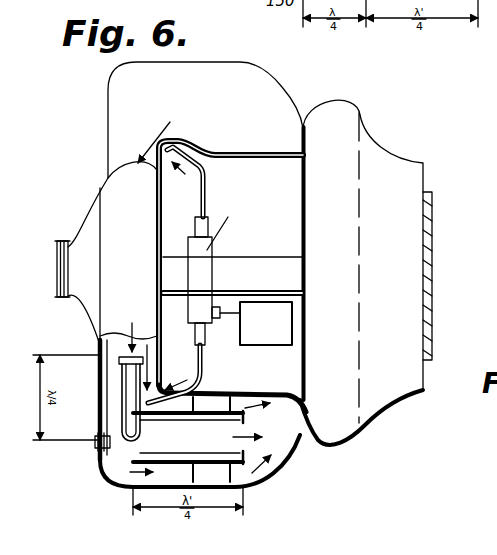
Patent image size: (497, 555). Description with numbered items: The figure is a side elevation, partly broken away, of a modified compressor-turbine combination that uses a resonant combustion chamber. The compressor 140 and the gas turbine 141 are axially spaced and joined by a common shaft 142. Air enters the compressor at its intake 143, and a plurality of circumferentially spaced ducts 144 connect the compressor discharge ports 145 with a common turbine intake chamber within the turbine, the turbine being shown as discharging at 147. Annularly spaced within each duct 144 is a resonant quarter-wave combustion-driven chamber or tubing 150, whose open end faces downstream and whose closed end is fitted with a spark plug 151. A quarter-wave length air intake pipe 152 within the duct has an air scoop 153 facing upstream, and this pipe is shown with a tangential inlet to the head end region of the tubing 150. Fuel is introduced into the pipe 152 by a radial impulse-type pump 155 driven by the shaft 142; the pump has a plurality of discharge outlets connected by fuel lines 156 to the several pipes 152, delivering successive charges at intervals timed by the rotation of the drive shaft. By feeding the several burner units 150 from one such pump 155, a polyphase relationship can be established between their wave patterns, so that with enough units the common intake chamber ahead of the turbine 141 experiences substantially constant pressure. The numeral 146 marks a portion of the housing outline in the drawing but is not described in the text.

The compressor 140 is at (113, 207).
The gas turbine 141 is at (393, 170).
The common shaft 142 is at (250, 266).
The compressor intake 143 is at (57, 250).
The ducts 144 is at (282, 92).
The compressor discharge ports 145 is at (110, 383).
The domed housing portion 146 is at (305, 110).
The turbine discharge 147 is at (433, 248).
The resonant quarter-wave combustion-driven chamber or tubing 150 is at (212, 406).
The spark plug 151 is at (110, 448).
The quarter-wave length air intake pipe 152 is at (128, 403).
The air scoop 153 is at (140, 365).
The radial impulse-type pump 155 is at (204, 324).
The fuel lines 156 is at (204, 183).